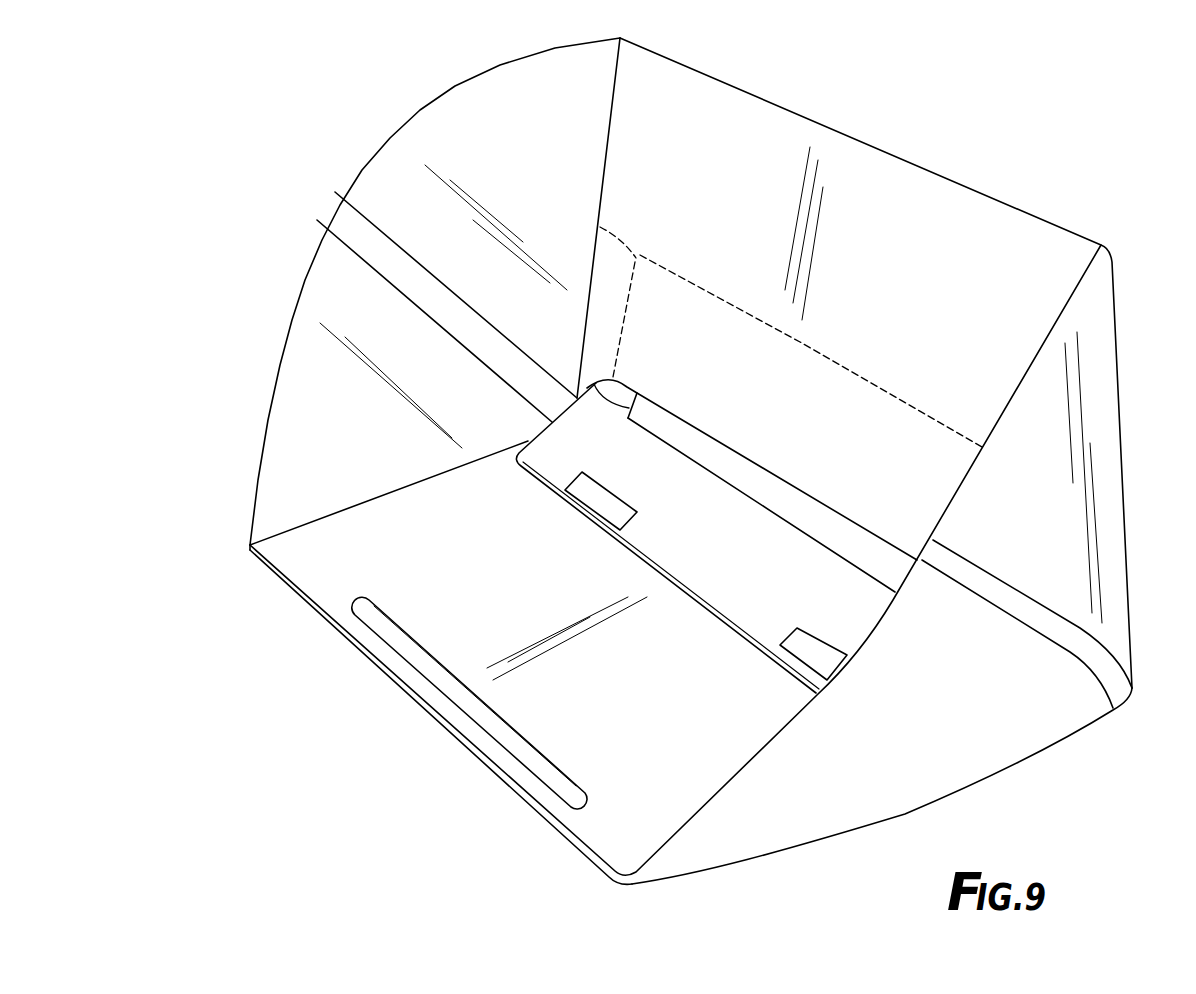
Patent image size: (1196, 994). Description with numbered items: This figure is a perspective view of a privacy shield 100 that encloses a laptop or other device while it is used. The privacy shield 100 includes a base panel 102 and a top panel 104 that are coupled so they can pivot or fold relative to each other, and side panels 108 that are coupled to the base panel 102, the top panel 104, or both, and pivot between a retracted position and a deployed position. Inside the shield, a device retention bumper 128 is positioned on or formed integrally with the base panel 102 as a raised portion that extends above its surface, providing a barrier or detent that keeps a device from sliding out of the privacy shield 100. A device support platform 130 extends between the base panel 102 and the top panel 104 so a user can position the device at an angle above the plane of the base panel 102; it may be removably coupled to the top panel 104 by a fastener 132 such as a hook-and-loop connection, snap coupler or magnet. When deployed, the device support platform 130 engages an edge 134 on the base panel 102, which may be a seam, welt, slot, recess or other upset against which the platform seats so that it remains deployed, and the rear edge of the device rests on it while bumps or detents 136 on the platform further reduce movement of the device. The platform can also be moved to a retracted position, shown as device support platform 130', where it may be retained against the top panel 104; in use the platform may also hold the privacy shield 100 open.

The privacy shield 100 is at (312, 142).
The base panel 102 is at (302, 573).
The top panel 104 is at (1015, 206).
The side panels 108 is at (335, 318).
The device retention bumper 128 is at (535, 762).
The device support platform 130 is at (655, 518).
The device support platform in retracted position 130' is at (744, 306).
The fastener 132 is at (583, 373).
The edge 134 is at (506, 458).
The bumps or detents 136 is at (602, 518).